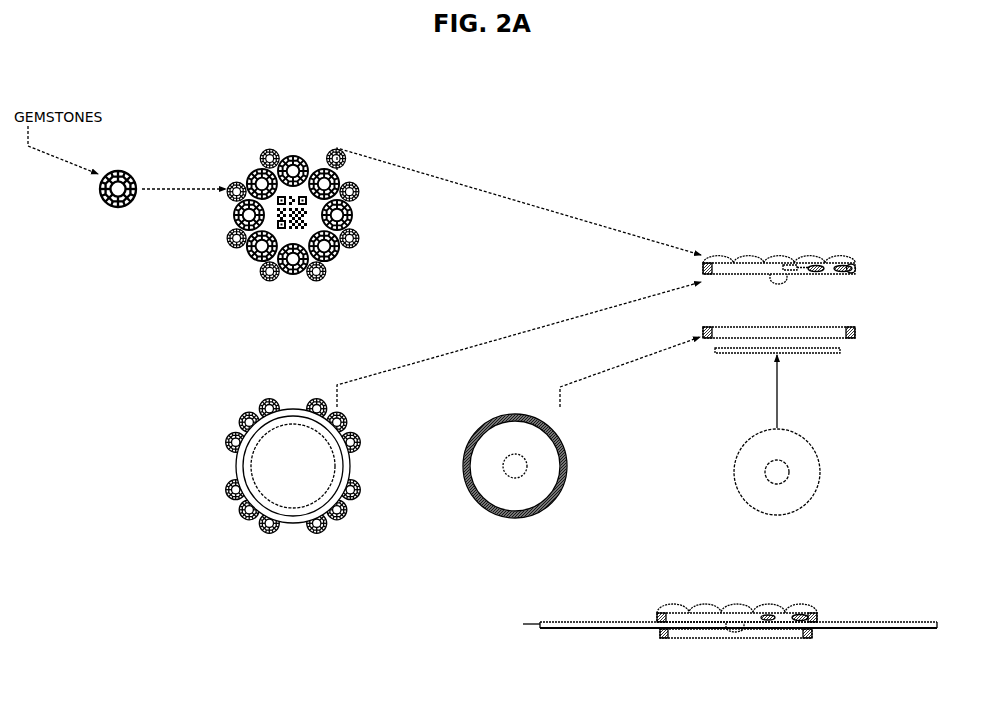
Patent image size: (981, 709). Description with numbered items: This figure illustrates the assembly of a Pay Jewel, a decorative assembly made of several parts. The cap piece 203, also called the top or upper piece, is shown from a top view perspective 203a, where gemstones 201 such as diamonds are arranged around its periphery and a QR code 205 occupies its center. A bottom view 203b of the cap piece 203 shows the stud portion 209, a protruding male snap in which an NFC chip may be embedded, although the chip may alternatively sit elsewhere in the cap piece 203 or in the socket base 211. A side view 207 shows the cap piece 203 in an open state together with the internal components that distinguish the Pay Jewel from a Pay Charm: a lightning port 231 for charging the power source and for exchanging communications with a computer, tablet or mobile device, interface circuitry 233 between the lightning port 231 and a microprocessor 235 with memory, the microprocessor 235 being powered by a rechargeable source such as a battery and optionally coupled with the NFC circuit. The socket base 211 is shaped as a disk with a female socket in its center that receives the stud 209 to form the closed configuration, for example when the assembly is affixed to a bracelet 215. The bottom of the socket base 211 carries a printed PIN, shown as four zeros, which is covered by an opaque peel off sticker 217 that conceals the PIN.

The gemstones 201 is at (118, 207).
The top view perspective 203a is at (329, 194).
The bottom view 203b is at (300, 481).
The cap piece 203 is at (818, 604).
The QR code 205 is at (312, 214).
The side view of gemstone socket module 207 is at (781, 271).
The stud portion 209 is at (768, 279).
The socket base 211 is at (612, 650).
The bracelet 215 is at (690, 639).
The peel off sticker 217 is at (828, 655).
The lightning port 231 is at (851, 272).
The interface circuitry 233 is at (818, 274).
The microprocessor 235 is at (793, 273).